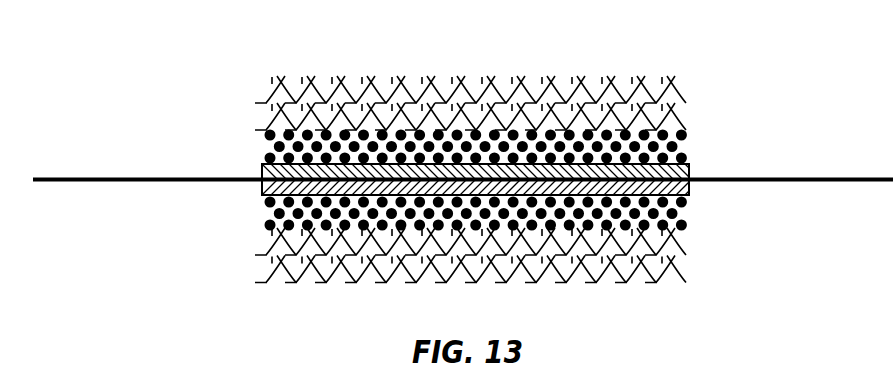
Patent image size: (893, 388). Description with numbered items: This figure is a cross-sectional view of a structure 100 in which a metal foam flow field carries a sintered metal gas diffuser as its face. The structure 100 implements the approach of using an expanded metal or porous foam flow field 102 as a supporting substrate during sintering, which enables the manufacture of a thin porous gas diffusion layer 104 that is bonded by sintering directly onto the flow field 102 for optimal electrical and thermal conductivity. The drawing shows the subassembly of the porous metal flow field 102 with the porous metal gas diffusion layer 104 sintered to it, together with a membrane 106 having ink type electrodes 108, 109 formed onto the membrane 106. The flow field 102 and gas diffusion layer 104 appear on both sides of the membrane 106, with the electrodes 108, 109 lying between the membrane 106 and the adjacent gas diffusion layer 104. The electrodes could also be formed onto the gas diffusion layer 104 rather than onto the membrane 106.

The structure 100 is at (463, 168).
The porous metal flow field 102 is at (392, 78).
The porous metal gas diffusion layer 104 is at (268, 148).
The membrane 106 is at (130, 178).
The ink type electrode 108 is at (689, 164).
The ink type electrode 109 is at (689, 195).